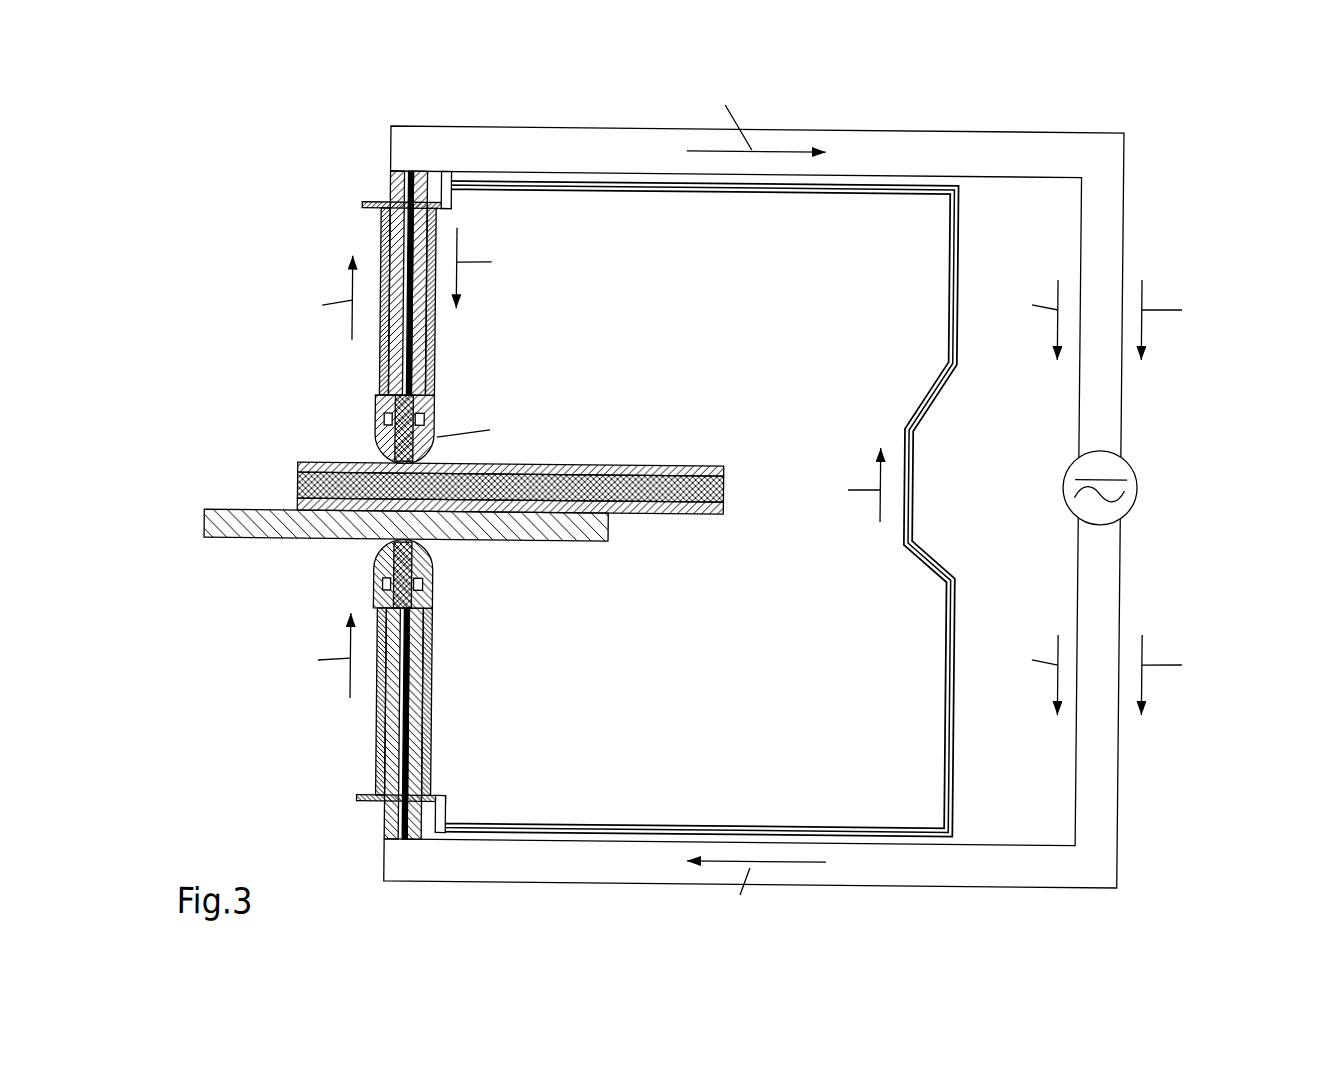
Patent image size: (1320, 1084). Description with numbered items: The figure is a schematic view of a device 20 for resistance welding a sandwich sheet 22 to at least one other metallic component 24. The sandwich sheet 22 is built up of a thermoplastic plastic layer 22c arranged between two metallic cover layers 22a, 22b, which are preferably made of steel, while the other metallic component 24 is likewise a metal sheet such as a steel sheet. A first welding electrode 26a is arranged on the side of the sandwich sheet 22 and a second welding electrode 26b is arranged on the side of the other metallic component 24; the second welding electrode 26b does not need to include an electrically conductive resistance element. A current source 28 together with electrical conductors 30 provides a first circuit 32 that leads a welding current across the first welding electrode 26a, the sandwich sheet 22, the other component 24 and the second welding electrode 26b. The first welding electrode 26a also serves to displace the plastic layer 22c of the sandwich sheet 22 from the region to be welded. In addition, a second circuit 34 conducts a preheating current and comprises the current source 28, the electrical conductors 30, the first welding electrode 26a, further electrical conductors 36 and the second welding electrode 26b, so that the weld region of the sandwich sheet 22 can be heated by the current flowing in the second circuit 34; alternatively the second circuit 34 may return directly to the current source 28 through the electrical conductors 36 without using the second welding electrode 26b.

The device 20 is at (700, 504).
The sandwich sheet 22 is at (406, 490).
The metallic cover layer 22a is at (313, 464).
The metallic cover layer 22b is at (302, 512).
The thermoplastic plastic layer 22c is at (302, 486).
The other metallic component 24 is at (348, 554).
The first welding electrode 26a is at (329, 236).
The second welding electrode 26b is at (318, 746).
The current source 28 is at (1140, 483).
The electrical conductors 30 is at (1104, 182).
The first circuit 32 is at (802, 505).
The second circuit 34 is at (697, 508).
The electrical conductors 36 is at (756, 186).